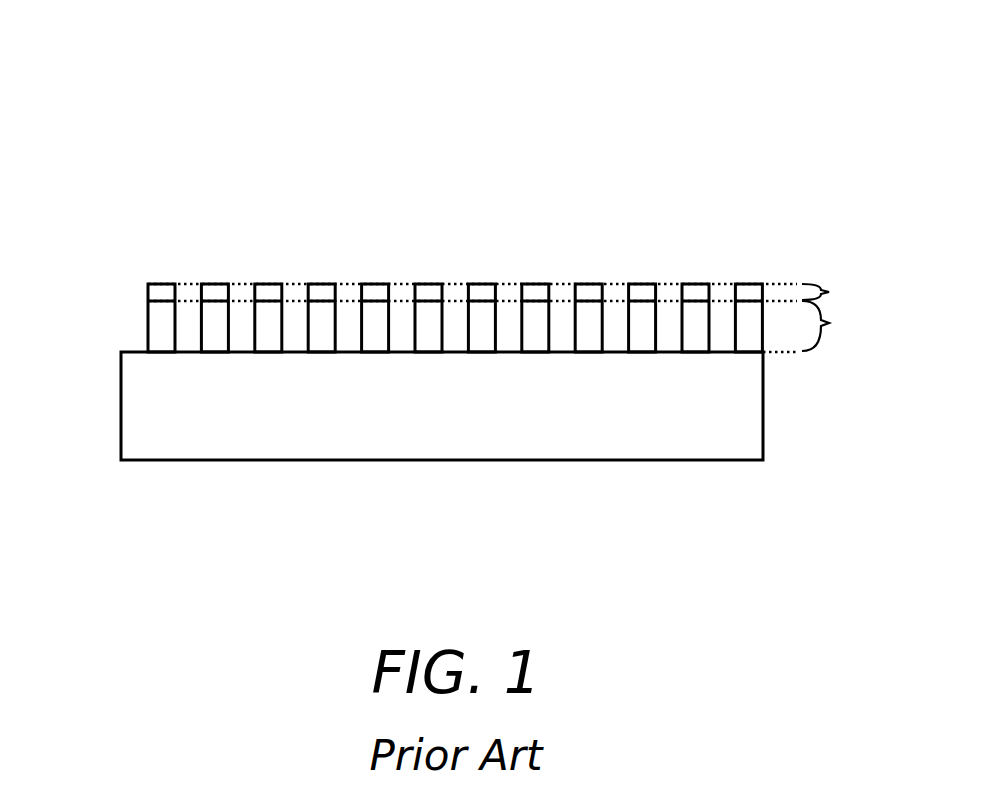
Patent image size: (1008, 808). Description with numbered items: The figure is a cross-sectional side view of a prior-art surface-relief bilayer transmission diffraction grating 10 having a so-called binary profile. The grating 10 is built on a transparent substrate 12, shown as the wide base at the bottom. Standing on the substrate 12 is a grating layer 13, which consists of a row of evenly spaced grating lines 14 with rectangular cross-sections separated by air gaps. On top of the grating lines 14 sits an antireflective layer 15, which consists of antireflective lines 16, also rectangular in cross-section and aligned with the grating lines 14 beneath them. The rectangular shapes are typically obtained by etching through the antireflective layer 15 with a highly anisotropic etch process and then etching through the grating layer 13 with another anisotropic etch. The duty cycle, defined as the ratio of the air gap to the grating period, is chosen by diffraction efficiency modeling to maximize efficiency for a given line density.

The surface-relief bilayer transmission diffraction grating 10 is at (538, 108).
The transparent substrate 12 is at (660, 419).
The grating layer 13 is at (841, 326).
The grating lines 14 is at (148, 308).
The antireflective layer 15 is at (840, 283).
The antireflective lines 16 is at (748, 285).